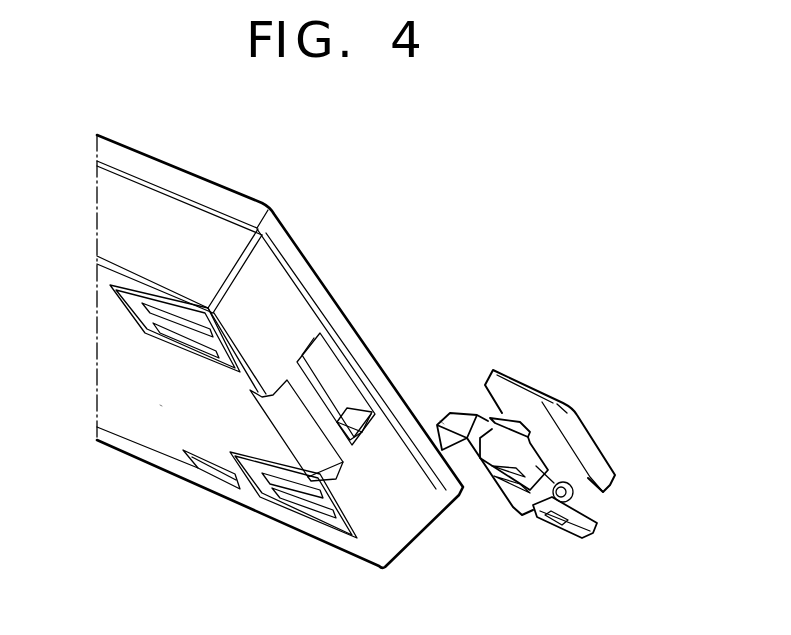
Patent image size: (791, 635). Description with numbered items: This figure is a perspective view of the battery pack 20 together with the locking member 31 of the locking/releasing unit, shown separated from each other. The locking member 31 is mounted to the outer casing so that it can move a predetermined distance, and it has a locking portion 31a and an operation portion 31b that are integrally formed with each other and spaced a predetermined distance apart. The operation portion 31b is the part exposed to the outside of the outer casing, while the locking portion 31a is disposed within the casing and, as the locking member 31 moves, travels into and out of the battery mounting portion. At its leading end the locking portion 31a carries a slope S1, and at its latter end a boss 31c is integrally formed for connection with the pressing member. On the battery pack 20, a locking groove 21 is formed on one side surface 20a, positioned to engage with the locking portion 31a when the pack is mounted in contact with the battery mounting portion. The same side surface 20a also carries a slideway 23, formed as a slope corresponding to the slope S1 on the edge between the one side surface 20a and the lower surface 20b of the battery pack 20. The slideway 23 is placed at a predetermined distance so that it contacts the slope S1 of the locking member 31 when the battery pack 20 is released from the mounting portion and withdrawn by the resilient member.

The battery pack 20 is at (250, 177).
The one side surface 20a is at (278, 303).
The lower surface 20b is at (163, 405).
The locking groove 21 is at (358, 411).
The slideway 23 is at (308, 445).
The locking member 31 is at (562, 447).
The locking portion 31a is at (493, 488).
The operation portion 31b is at (597, 457).
The boss 31c is at (540, 500).
The slope S1 is at (440, 423).